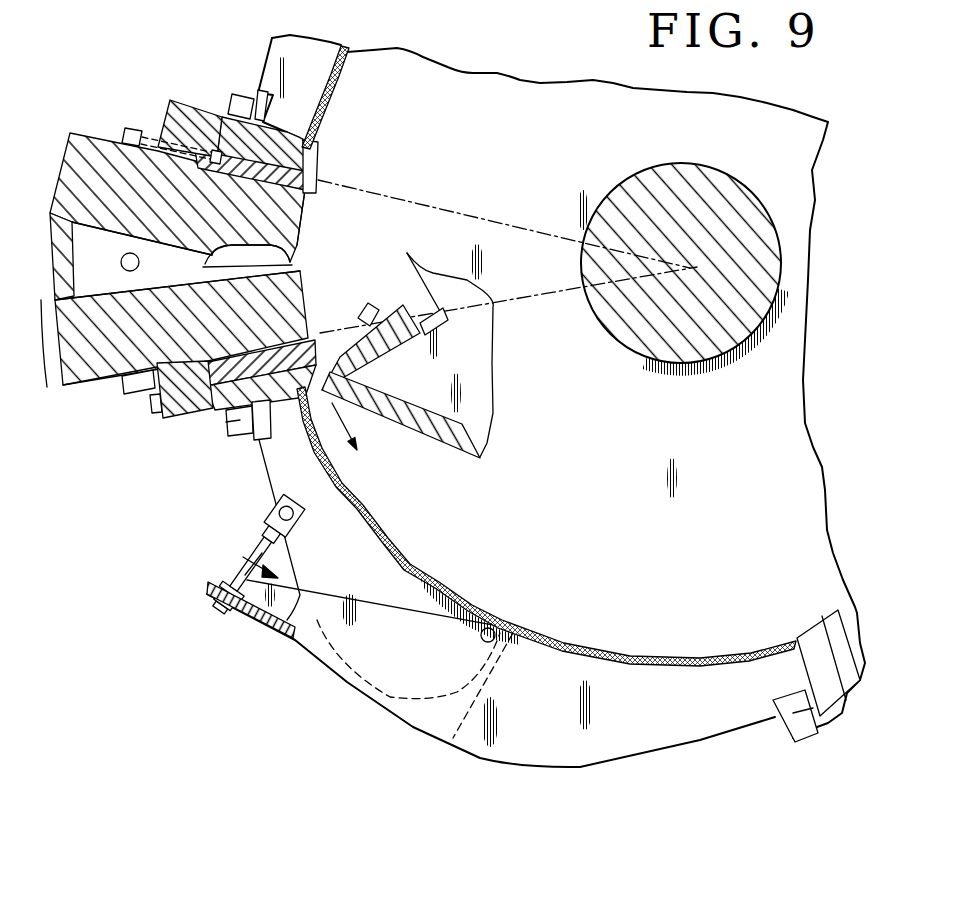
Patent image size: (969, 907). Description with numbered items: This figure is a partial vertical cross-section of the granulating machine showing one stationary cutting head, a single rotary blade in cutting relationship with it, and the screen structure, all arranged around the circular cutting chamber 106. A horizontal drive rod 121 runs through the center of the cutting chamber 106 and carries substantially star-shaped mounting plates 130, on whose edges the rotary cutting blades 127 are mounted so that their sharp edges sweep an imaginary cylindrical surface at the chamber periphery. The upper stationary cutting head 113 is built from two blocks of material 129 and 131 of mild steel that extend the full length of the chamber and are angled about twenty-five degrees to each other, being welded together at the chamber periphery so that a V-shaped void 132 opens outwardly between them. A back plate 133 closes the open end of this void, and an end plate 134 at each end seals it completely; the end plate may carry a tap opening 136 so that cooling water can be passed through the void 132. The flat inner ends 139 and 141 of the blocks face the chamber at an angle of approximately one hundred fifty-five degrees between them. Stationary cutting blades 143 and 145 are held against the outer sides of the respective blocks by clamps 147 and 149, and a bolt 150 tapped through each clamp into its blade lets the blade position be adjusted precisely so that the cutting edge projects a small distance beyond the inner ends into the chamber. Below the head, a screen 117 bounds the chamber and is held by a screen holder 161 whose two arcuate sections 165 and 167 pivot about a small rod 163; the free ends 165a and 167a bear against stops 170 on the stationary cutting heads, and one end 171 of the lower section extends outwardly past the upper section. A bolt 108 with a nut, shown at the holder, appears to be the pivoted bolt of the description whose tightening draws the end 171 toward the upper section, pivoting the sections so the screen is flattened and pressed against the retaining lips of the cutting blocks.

The cutting chamber 106 is at (547, 545).
The bolt 108 is at (240, 570).
The upper stationary cutting head 113 is at (107, 373).
The screen 117 is at (407, 557).
The horizontal drive rod 121 is at (637, 347).
The rotary cutting blade 127 is at (388, 348).
The block of material 129 is at (100, 143).
The star-shaped mounting plate 130 is at (482, 413).
The block of material 131 is at (105, 378).
The V-shaped void 132 is at (297, 249).
The back plate 133 is at (98, 352).
The end plate 134 is at (110, 274).
The tap opening 136 is at (140, 262).
The inner end 139 is at (305, 207).
The inner end 141 is at (300, 280).
The stationary cutting blade 143 is at (313, 174).
The stationary cutting blade 145 is at (317, 338).
The clamp 147 is at (203, 118).
The clamp 149 is at (213, 410).
The bolt 150 is at (140, 392).
The screen holder 161 is at (255, 553).
The small rod 163 is at (490, 633).
The arcuate section 165 is at (358, 527).
The free end 165a is at (285, 397).
The arcuate section 167 is at (613, 750).
The free end 167a is at (790, 646).
The stop 170 is at (237, 428).
The one end 171 is at (258, 625).